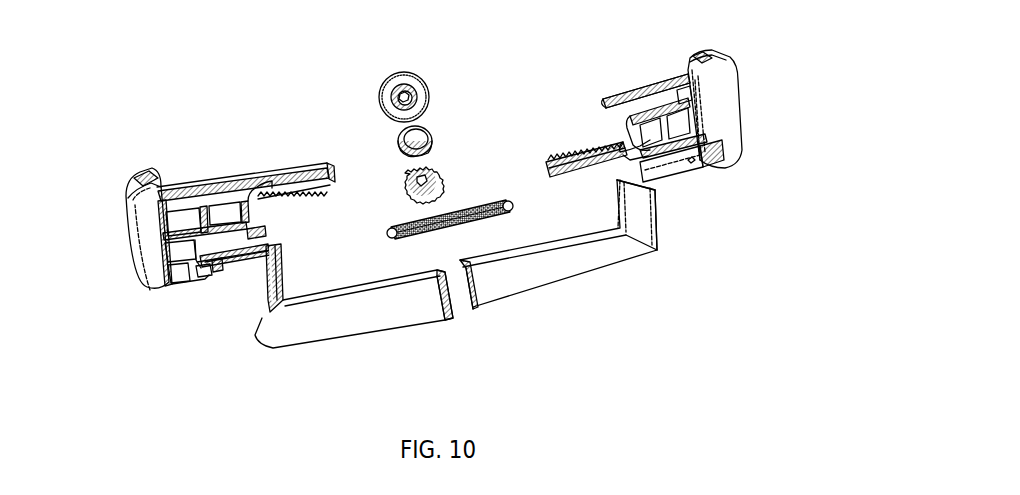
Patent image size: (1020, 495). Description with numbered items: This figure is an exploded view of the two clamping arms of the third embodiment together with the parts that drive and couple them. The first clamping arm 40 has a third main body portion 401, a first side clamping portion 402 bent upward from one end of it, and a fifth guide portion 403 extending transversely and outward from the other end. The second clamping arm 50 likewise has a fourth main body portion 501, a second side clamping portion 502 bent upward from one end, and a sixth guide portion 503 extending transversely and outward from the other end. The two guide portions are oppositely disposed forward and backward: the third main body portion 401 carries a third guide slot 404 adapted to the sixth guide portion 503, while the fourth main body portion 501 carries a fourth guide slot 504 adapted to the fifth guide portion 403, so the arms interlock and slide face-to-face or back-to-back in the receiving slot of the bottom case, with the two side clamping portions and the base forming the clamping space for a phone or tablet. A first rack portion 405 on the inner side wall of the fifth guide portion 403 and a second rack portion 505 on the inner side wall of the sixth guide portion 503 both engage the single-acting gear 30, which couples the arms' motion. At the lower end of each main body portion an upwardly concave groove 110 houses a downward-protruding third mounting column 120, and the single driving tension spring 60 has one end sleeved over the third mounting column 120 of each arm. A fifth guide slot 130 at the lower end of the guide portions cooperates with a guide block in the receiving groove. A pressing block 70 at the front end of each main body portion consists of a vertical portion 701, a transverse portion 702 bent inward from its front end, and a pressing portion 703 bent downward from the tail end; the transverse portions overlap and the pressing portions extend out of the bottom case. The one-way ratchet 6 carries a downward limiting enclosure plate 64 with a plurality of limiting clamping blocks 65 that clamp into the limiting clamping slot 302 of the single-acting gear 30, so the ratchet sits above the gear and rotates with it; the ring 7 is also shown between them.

The second clamping arm 50 is at (210, 232).
The fourth main body portion 501 is at (192, 192).
The second side clamping portion 502 is at (136, 172).
The sixth guide portion 503 is at (327, 165).
The fourth guide slot 504 is at (224, 272).
The second rack portion 505 is at (300, 192).
The groove 110 is at (268, 244).
The third mounting column 120 is at (203, 277).
The fifth guide slot 130 is at (255, 205).
The one-way ratchet 6 is at (405, 97).
The limiting enclosure plate 64 is at (398, 95).
The limiting clamping blocks 65 is at (395, 104).
The bushing ring 7 is at (432, 140).
The single-acting gear 30 is at (408, 170).
The limiting clamping slot 302 is at (445, 162).
The driving tension spring 60 is at (447, 238).
The pressing block 70 is at (434, 294).
The vertical portion 701 is at (268, 294).
The transverse portion 702 is at (410, 312).
The pressing portion 703 is at (478, 296).
The first clamping arm 40 is at (647, 119).
The third main body portion 401 is at (660, 90).
The first side clamping portion 402 is at (730, 61).
The fifth guide portion 403 is at (552, 165).
The third guide slot 404 is at (615, 95).
The first rack portion 405 is at (620, 150).